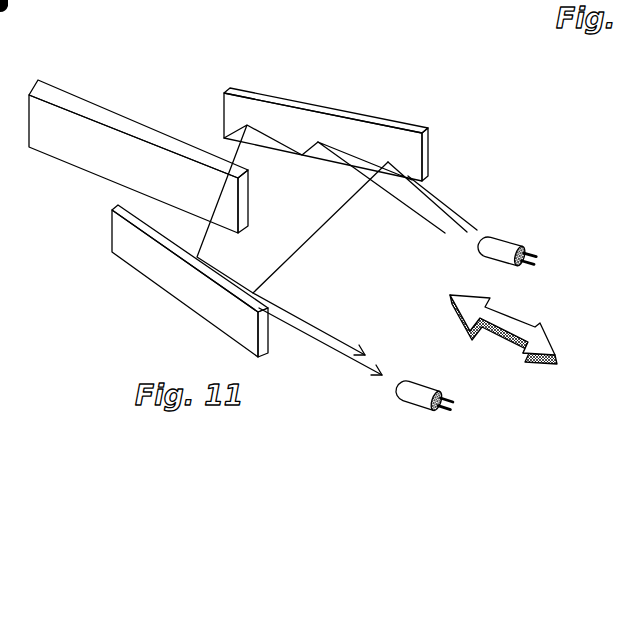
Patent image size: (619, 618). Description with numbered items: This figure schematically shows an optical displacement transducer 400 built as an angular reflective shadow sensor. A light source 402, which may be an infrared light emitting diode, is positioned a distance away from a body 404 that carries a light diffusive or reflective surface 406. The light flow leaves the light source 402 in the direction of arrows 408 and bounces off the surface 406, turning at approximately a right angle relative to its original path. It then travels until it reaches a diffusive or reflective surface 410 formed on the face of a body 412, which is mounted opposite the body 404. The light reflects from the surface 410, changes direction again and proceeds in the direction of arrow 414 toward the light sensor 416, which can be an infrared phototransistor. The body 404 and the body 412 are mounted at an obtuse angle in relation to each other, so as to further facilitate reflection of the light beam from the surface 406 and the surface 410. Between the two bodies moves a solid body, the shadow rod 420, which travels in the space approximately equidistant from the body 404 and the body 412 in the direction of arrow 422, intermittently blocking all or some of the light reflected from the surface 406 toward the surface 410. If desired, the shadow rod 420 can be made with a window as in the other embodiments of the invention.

The optical displacement transducer 400 is at (230, 66).
The light source 402 is at (514, 243).
The body 404 is at (353, 118).
The light diffusive or reflective surface 406 is at (417, 152).
The arrows 408 is at (457, 212).
The diffusive or reflective surface 410 is at (152, 221).
The body 412 is at (143, 262).
The arrow 414 is at (318, 323).
The light sensor 416 is at (440, 395).
The shadow rod 420 is at (120, 121).
The arrow 422 is at (513, 324).